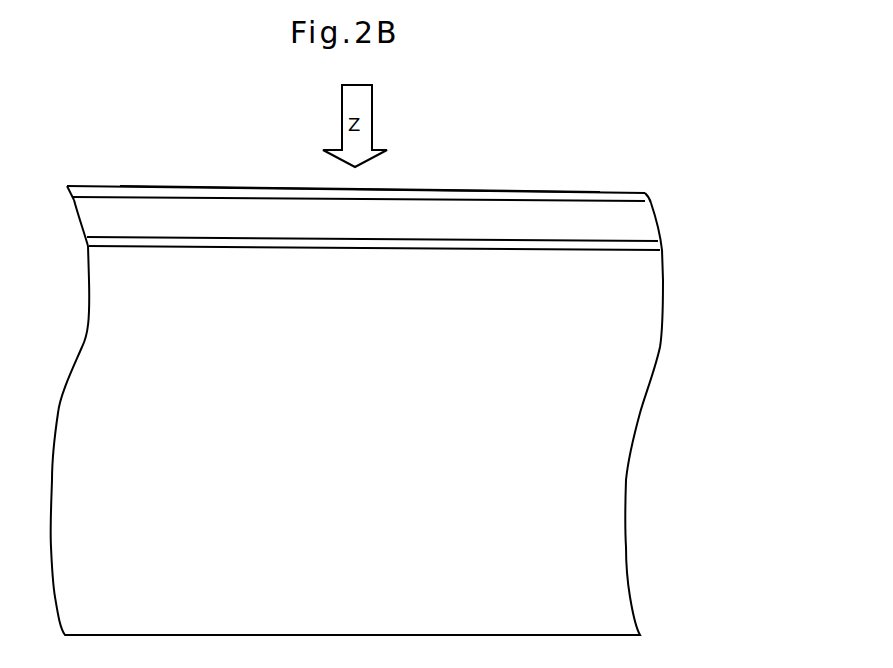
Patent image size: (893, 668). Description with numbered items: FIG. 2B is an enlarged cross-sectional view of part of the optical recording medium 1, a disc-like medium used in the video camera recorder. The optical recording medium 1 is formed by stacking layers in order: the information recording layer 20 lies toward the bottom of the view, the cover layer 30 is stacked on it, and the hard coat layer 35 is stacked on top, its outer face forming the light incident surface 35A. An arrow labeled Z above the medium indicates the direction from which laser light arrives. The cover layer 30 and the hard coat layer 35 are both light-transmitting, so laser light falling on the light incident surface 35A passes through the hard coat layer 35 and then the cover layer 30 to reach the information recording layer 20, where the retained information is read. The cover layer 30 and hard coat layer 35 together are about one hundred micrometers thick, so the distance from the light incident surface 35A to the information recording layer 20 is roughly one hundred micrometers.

The optical recording medium 1 is at (640, 145).
The information recording layer 20 is at (655, 240).
The cover layer 30 is at (637, 222).
The hard coat layer 35 is at (645, 192).
The light incident surface 35A is at (458, 188).